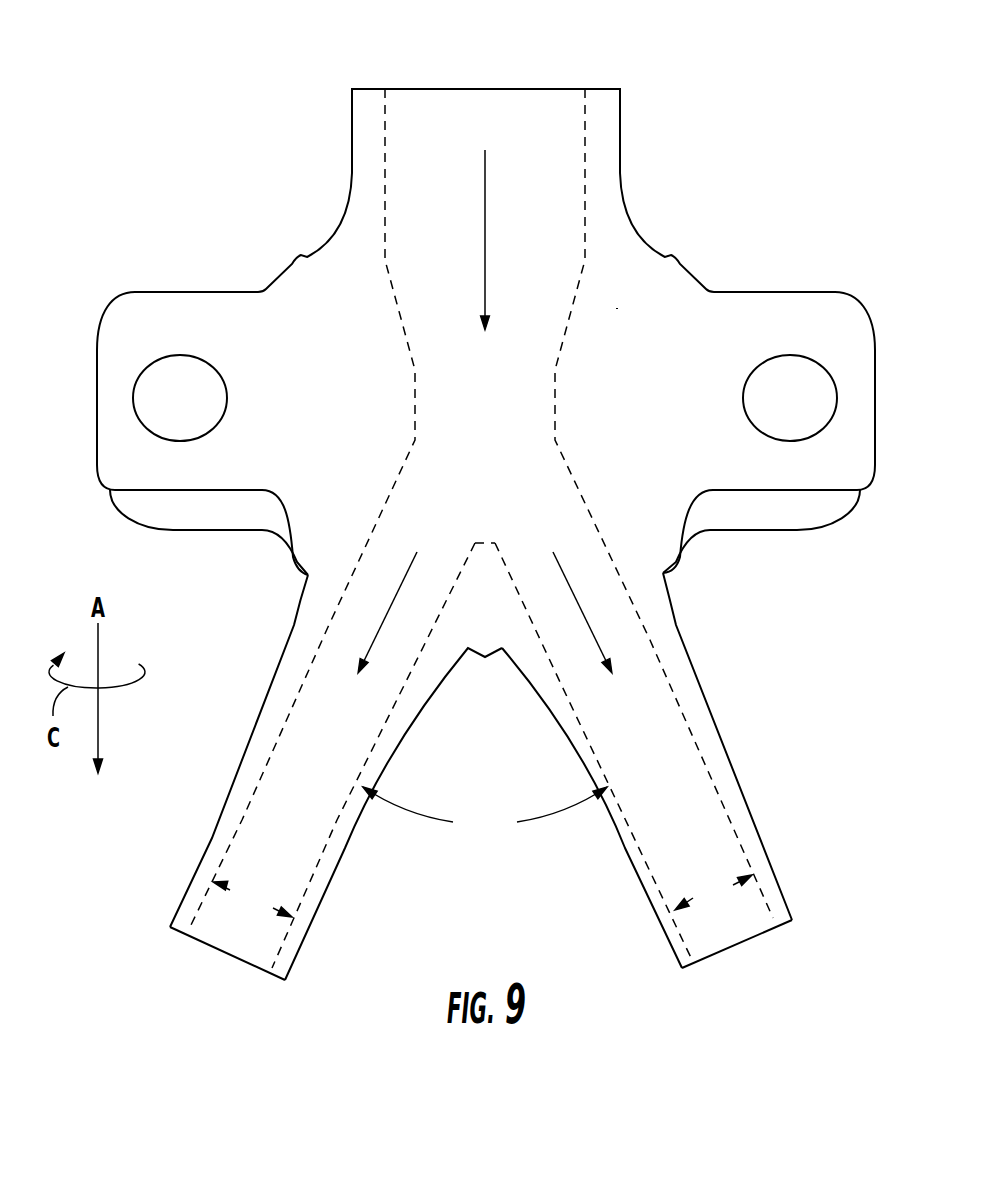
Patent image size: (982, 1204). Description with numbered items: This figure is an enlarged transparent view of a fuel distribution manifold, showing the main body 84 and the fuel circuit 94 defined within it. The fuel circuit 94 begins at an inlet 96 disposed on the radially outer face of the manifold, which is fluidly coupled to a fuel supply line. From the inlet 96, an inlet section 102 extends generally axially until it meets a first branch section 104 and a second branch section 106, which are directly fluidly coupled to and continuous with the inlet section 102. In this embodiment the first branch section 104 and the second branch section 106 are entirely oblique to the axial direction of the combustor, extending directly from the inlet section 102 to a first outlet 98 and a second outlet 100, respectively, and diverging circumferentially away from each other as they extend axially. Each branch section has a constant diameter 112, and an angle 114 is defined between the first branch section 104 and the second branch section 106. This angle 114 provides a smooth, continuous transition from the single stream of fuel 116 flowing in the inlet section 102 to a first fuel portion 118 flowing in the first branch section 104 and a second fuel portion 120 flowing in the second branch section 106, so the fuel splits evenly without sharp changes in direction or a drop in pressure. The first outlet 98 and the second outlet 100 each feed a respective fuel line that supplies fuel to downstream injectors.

The main body 84 is at (617, 308).
The fuel circuit 94 is at (500, 408).
The inlet 96 is at (495, 80).
The first outlet 98 is at (212, 965).
The second outlet 100 is at (753, 957).
The inlet section 102 is at (445, 302).
The first branch section 104 is at (297, 790).
The second branch section 106 is at (672, 783).
The constant diameter 112 is at (482, 896).
The angle 114 is at (485, 814).
The single stream of fuel 116 is at (487, 223).
The first fuel portion 118 is at (393, 597).
The second fuel portion 120 is at (579, 597).